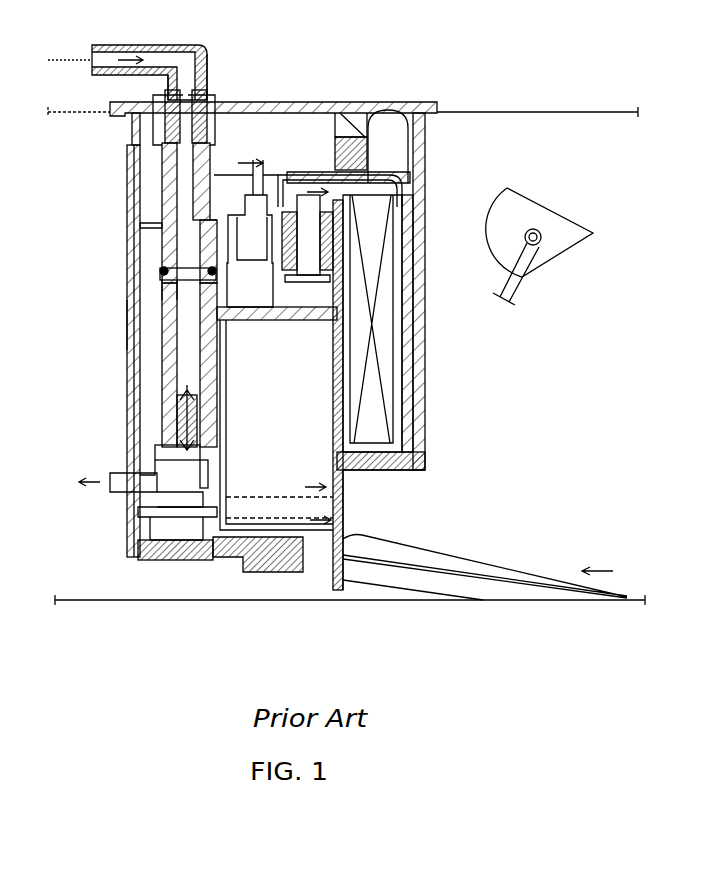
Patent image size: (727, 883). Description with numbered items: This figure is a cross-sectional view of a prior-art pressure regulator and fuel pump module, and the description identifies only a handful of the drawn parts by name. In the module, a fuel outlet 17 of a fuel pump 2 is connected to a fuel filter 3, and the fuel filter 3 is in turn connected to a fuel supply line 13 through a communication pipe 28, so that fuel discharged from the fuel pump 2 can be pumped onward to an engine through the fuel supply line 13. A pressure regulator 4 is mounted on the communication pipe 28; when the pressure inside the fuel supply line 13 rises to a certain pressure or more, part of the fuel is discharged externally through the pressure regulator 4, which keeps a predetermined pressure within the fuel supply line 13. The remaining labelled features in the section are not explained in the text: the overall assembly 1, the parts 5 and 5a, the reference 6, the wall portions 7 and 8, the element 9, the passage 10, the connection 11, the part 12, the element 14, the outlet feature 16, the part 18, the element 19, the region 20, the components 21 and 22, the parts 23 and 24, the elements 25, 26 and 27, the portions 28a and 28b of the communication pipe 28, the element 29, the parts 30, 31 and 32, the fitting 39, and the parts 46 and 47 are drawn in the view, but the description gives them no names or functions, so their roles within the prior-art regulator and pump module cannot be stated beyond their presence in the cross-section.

The fuel injection valve 1 is at (118, 327).
The fuel pump 2 is at (344, 520).
The fuel filter 3 is at (425, 270).
The pressure regulator 4 is at (163, 522).
The housing cover 5 is at (392, 108).
The step portion 5a is at (140, 223).
The upper reference line 6 is at (535, 110).
The outer casing 7 is at (128, 170).
The inner liner 8 is at (128, 186).
The spacer 9 is at (345, 118).
The fuel pipe 10 is at (170, 240).
The inlet pipe 11 is at (178, 46).
The sealing gland 12 is at (205, 95).
The fuel supply line 13 is at (91, 60).
The fixed core 14 is at (372, 160).
The injection nozzle 16 is at (507, 570).
The fuel outlet 17 is at (300, 282).
The lower plate 18 is at (250, 572).
The vent passage 19 is at (263, 170).
The gap 20 is at (350, 492).
The cam 21 is at (565, 222).
The lever 22 is at (512, 298).
The plunger cup 23 is at (270, 236).
The guide plate 24 is at (274, 318).
The coil 25 is at (372, 345).
The yoke 26 is at (412, 368).
The bottom plate 27 is at (425, 462).
The communication pipe 28 is at (165, 345).
The stem upper portion 28a is at (162, 283).
The stem lower portion 28b is at (276, 426).
The valve member 29 is at (160, 415).
The stopper 30 is at (162, 272).
The valve plate 31 is at (207, 456).
The orifice 32 is at (208, 462).
The outlet pipe 39 is at (122, 472).
The flange 46 is at (115, 497).
The base plate 47 is at (177, 560).